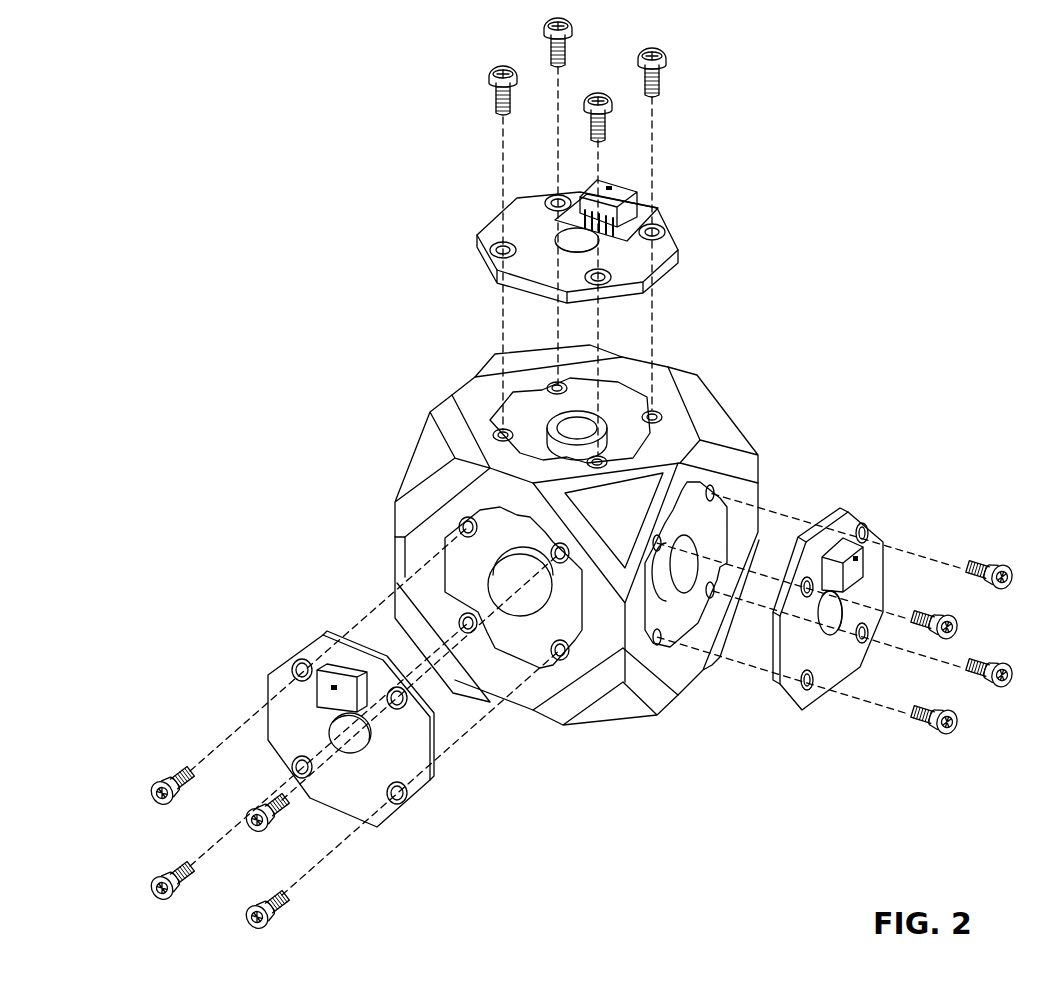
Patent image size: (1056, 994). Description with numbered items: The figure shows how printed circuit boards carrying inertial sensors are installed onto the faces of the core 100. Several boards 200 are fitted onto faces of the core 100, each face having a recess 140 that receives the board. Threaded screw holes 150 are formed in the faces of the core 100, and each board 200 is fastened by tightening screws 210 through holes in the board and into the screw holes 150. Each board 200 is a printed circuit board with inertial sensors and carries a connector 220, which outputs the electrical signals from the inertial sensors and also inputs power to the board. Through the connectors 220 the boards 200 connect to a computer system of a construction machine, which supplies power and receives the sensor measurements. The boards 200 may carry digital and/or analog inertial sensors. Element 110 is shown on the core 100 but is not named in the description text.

The core 100 is at (682, 684).
The top edge rail 110 is at (725, 424).
The recess 140 is at (618, 398).
The screw hole 150 is at (718, 500).
The board 200 is at (663, 266).
The screw 210 is at (978, 567).
The connector 220 is at (623, 194).